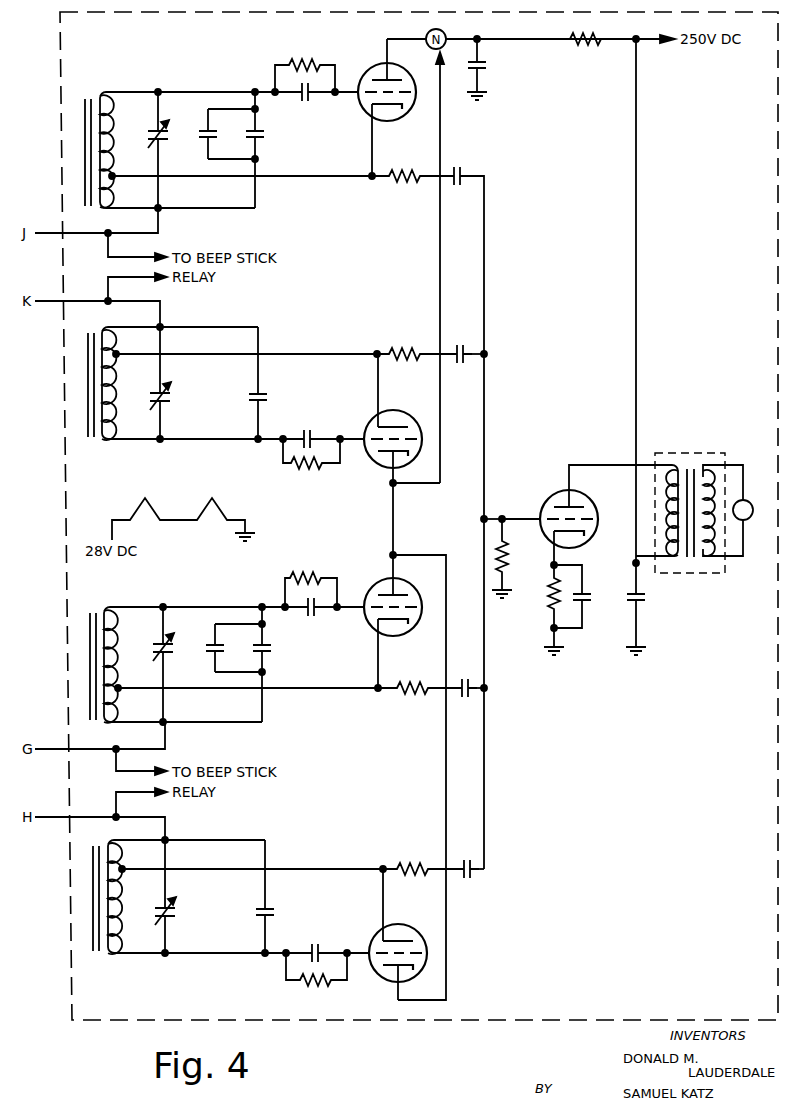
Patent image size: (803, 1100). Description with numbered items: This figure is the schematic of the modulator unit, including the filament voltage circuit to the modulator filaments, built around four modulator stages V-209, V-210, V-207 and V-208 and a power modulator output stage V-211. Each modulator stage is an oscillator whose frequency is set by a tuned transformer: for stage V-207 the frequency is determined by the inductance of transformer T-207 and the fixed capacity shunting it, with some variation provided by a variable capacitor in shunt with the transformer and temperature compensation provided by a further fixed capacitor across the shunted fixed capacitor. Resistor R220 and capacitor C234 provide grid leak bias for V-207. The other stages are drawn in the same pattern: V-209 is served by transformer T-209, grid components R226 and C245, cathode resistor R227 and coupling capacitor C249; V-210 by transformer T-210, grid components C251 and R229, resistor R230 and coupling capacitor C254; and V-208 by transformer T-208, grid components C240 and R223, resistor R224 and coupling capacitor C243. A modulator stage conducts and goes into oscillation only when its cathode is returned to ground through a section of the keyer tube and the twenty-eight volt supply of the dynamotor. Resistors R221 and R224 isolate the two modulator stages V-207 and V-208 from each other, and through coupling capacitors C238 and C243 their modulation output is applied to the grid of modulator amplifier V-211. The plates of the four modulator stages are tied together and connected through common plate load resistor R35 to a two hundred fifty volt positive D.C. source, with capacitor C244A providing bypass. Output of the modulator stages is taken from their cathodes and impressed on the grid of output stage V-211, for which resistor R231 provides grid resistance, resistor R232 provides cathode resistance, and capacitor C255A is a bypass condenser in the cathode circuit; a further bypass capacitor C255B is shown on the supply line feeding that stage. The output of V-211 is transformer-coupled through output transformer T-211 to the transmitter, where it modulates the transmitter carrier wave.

The tuned input transformer T-209 is at (228, 140).
The grid resistor R226 is at (305, 69).
The grid coupling capacitor C245 is at (305, 102).
The modulator stage V-209 is at (381, 107).
The bypass capacitor C244A is at (501, 69).
The common plate load resistor R35 is at (572, 48).
The cathode resistor R227 is at (407, 184).
The coupling capacitor C249 is at (464, 507).
The tuned input transformer T-210 is at (232, 373).
The plate resistor R230 is at (411, 345).
The coupling capacitor C254 is at (487, 354).
The grid coupling capacitor C251 is at (311, 429).
The grid resistor R229 is at (311, 462).
The modulator stage V-210 is at (384, 456).
The modulator amplifier V-211 is at (576, 515).
The grid resistor R231 is at (519, 558).
The cathode resistor R232 is at (531, 608).
The bypass condenser C255A is at (589, 596).
The supply bypass capacitor C255B is at (663, 607).
The output transformer T-211 is at (694, 502).
The transformer T-207 is at (234, 656).
The resistor R220 is at (311, 584).
The capacitor C234 is at (311, 617).
The modulator stage V-207 is at (279, 585).
The resistor R221 is at (415, 697).
The coupling capacitor C238 is at (491, 688).
The tuned input transformer T-208 is at (238, 888).
The resistor R224 is at (417, 860).
The coupling capacitor C243 is at (470, 876).
The grid coupling capacitor C240 is at (316, 944).
The grid resistor R223 is at (316, 978).
The modulator stage V-208 is at (313, 739).